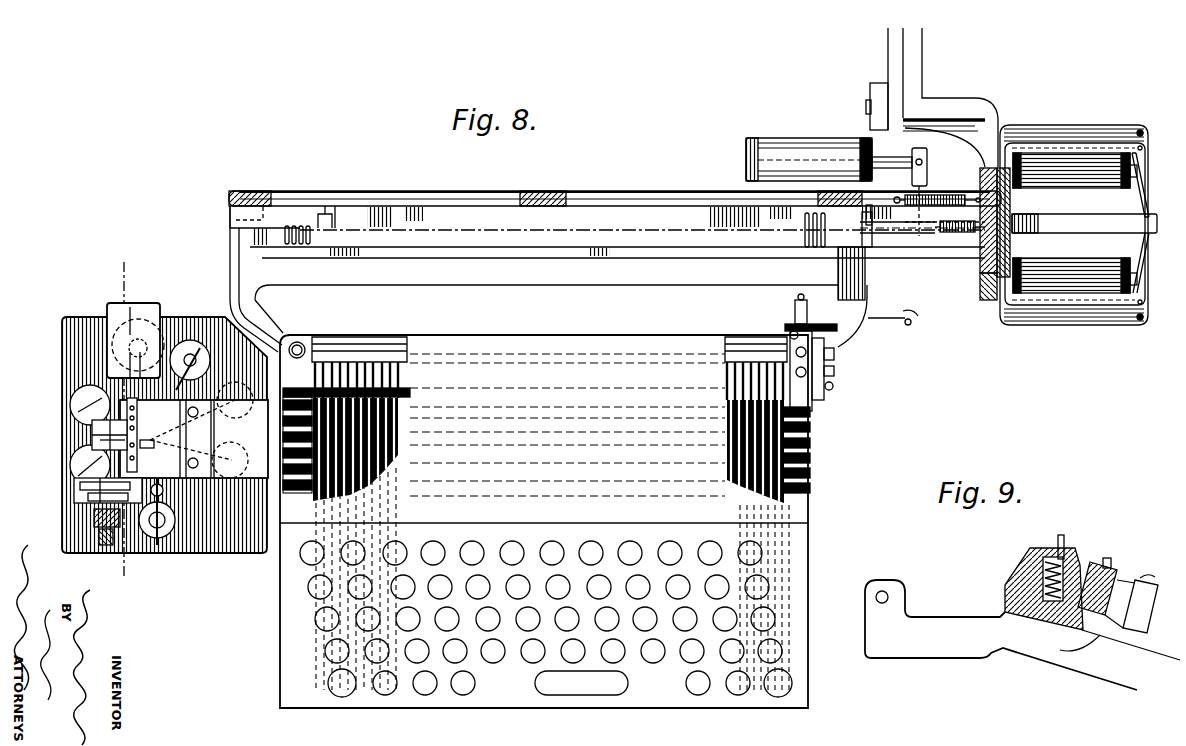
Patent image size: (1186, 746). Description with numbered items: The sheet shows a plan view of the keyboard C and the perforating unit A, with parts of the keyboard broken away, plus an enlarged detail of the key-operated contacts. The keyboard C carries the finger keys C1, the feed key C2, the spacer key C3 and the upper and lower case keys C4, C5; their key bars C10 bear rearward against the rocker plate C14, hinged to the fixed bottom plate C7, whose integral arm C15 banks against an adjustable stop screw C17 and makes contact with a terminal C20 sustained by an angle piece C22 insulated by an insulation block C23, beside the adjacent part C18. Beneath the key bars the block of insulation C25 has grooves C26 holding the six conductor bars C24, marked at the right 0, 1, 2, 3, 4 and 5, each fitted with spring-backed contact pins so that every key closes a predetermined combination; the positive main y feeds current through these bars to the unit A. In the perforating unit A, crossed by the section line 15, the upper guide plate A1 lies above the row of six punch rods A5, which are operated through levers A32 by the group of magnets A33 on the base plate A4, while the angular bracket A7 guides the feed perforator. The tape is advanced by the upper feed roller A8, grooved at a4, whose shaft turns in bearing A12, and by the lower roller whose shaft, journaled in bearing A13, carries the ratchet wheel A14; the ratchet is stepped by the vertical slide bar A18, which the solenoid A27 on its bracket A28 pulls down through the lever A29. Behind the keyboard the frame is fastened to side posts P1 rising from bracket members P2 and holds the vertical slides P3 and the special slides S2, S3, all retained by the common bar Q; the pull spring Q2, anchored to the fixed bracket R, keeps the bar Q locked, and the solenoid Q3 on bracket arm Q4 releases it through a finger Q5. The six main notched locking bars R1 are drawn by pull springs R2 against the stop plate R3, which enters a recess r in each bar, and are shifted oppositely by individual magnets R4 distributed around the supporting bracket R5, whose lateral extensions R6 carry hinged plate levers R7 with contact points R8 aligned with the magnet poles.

In FIG. 8, the main notched locking bars R1 is at (278, 212).
In FIG. 8, the recess r is at (322, 224).
In FIG. 8, the vertical slides P3 is at (330, 224).
In FIG. 8, the special slide S2 is at (301, 246).
In FIG. 8, the special slide S3 is at (808, 247).
In FIG. 8, the upright side posts P1 is at (238, 243).
In FIG. 8, the bracket members P2 is at (271, 322).
In FIG. 8, the positive main y is at (893, 322).
In FIG. 8, the keyboard C is at (519, 701).
In FIG. 8, the rocker plate C14 is at (372, 360).
In FIG. 8, the key bars C10 is at (410, 393).
In FIG. 8, the conductor bars C24 is at (283, 420).
In FIG. 9, the conductor bars C24 is at (1082, 561).
In FIG. 8, the conductor bar marking 0 is at (812, 412).
In FIG. 8, the conductor bar marking 1 is at (812, 427).
In FIG. 8, the conductor bar marking 2 is at (812, 443).
In FIG. 8, the conductor bar marking 3 is at (812, 458).
In FIG. 8, the conductor bar marking 4 is at (812, 473).
In FIG. 8, the conductor bar marking 5 is at (812, 488).
In FIG. 8, the insulation block C23 is at (794, 312).
In FIG. 8, the angle piece C22 is at (785, 328).
In FIG. 8, the terminal C20 is at (824, 352).
In FIG. 8, the integral arm C15 is at (834, 356).
In FIG. 8, the block C18 is at (834, 372).
In FIG. 8, the stop screw C17 is at (833, 389).
In FIG. 8, the finger keys C1 is at (440, 548).
In FIG. 8, the lower case key C5 is at (328, 683).
In FIG. 8, the feed key C2 is at (476, 686).
In FIG. 9, the feed key C2 is at (1061, 536).
In FIG. 8, the spacer key C3 is at (630, 688).
In FIG. 9, the spacer key C3 is at (1043, 578).
In FIG. 8, the upper case key C4 is at (774, 698).
In FIG. 8, the solenoid Q3 is at (829, 159).
In FIG. 8, the bracket arm Q4 is at (870, 129).
In FIG. 8, the fixed bracket R is at (998, 122).
In FIG. 8, the finger Q5 is at (929, 173).
In FIG. 8, the pull springs R2 is at (938, 197).
In FIG. 8, the bar Q is at (915, 235).
In FIG. 8, the pull spring Q2 is at (966, 233).
In FIG. 8, the stop plate R3 is at (872, 238).
In FIG. 8, the supporting bracket R5 is at (992, 292).
In FIG. 8, the lateral extensions R6 is at (1048, 127).
In FIG. 8, the magnets R4 is at (1066, 186).
In FIG. 8, the plate levers R7 is at (1147, 182).
In FIG. 8, the contact points R8 is at (1138, 181).
In FIG. 8, the perforating unit A is at (164, 420).
In FIG. 8, the section line 15 is at (122, 418).
In FIG. 8, the bracket A28 is at (149, 305).
In FIG. 8, the solenoid A27 is at (150, 335).
In FIG. 8, the magnets A33 is at (198, 352).
In FIG. 8, the levers A32 is at (200, 368).
In FIG. 8, the lever A29 is at (88, 394).
In FIG. 8, the bearing A13 is at (92, 458).
In FIG. 8, the punch rods A5 is at (194, 430).
In FIG. 8, the angular bracket A7 is at (140, 412).
In FIG. 8, the bearing A12 is at (95, 424).
In FIG. 8, the upper feed roller A8 is at (100, 436).
In FIG. 8, the peripheral groove a4 is at (98, 444).
In FIG. 8, the ratchet wheel A14 is at (85, 490).
In FIG. 8, the slide bar A18 is at (146, 450).
In FIG. 8, the upper guide plate A1 is at (174, 482).
In FIG. 8, the base plate A4 is at (70, 548).
In FIG. 9, the bottom plate C7 is at (930, 626).
In FIG. 9, the insulation block C25 is at (1079, 648).
In FIG. 9, the grooves C26 is at (1147, 636).